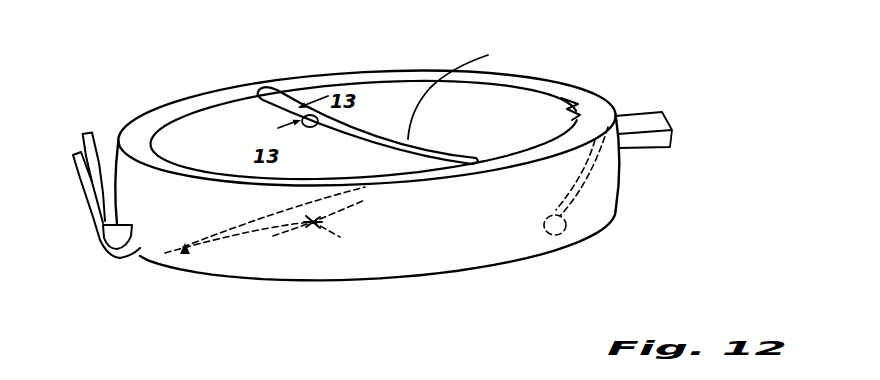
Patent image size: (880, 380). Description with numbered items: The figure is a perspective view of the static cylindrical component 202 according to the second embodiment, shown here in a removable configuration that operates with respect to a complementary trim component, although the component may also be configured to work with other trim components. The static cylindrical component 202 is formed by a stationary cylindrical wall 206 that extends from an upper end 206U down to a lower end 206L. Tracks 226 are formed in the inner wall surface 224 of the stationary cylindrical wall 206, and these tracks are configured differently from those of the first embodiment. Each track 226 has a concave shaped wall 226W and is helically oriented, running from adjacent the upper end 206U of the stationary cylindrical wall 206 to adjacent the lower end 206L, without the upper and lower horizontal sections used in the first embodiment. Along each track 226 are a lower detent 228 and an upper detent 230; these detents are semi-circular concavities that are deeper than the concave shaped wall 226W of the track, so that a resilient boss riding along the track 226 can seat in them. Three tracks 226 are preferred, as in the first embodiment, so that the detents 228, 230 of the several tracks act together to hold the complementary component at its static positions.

The static cylindrical component 202 is at (596, 242).
The stationary cylindrical wall 206 is at (620, 172).
The upper end of the stationary cylindrical wall 206U is at (607, 104).
The lower end of the stationary cylindrical wall 206L is at (518, 259).
The inner wall surface 224 is at (513, 100).
The tracks 226 is at (280, 292).
The concave shaped wall 226W is at (376, 134).
The lower detent 228 is at (461, 148).
The upper detent 230 is at (298, 120).